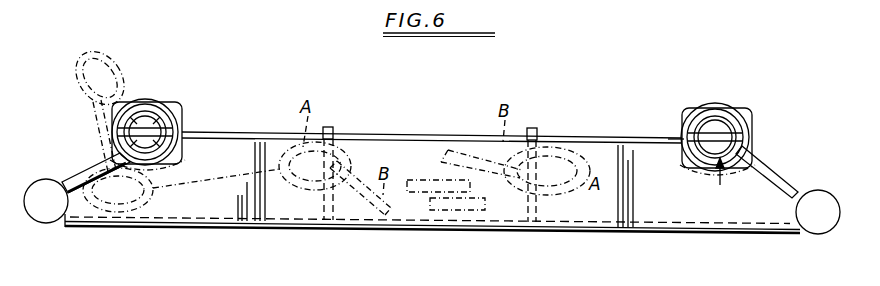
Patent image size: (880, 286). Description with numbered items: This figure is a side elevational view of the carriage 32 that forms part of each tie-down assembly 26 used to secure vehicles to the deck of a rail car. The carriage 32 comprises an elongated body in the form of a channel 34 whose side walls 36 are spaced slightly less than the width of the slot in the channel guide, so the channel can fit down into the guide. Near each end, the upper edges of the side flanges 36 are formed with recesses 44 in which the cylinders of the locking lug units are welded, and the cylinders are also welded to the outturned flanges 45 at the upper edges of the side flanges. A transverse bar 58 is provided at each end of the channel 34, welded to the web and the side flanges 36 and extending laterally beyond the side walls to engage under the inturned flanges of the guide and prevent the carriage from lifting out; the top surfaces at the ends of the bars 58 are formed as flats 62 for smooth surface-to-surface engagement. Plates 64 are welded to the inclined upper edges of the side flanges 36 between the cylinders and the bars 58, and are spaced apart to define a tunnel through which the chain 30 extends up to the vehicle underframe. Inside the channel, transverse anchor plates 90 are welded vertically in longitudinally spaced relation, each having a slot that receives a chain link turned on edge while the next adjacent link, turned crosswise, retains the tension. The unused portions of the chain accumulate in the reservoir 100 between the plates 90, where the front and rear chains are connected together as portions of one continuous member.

The tie-down assembly 26 is at (70, 96).
The rear chain 30 is at (122, 72).
The carriage 32 is at (647, 131).
The channel 34 is at (673, 210).
The side walls 36 is at (593, 213).
The recesses 44 is at (721, 185).
The outturned flanges 45 is at (247, 137).
The transverse bar 58 is at (47, 210).
The flats 62 is at (45, 183).
The plates 64 is at (86, 170).
The anchor plates 90 is at (318, 215).
The reservoir 100 is at (425, 152).